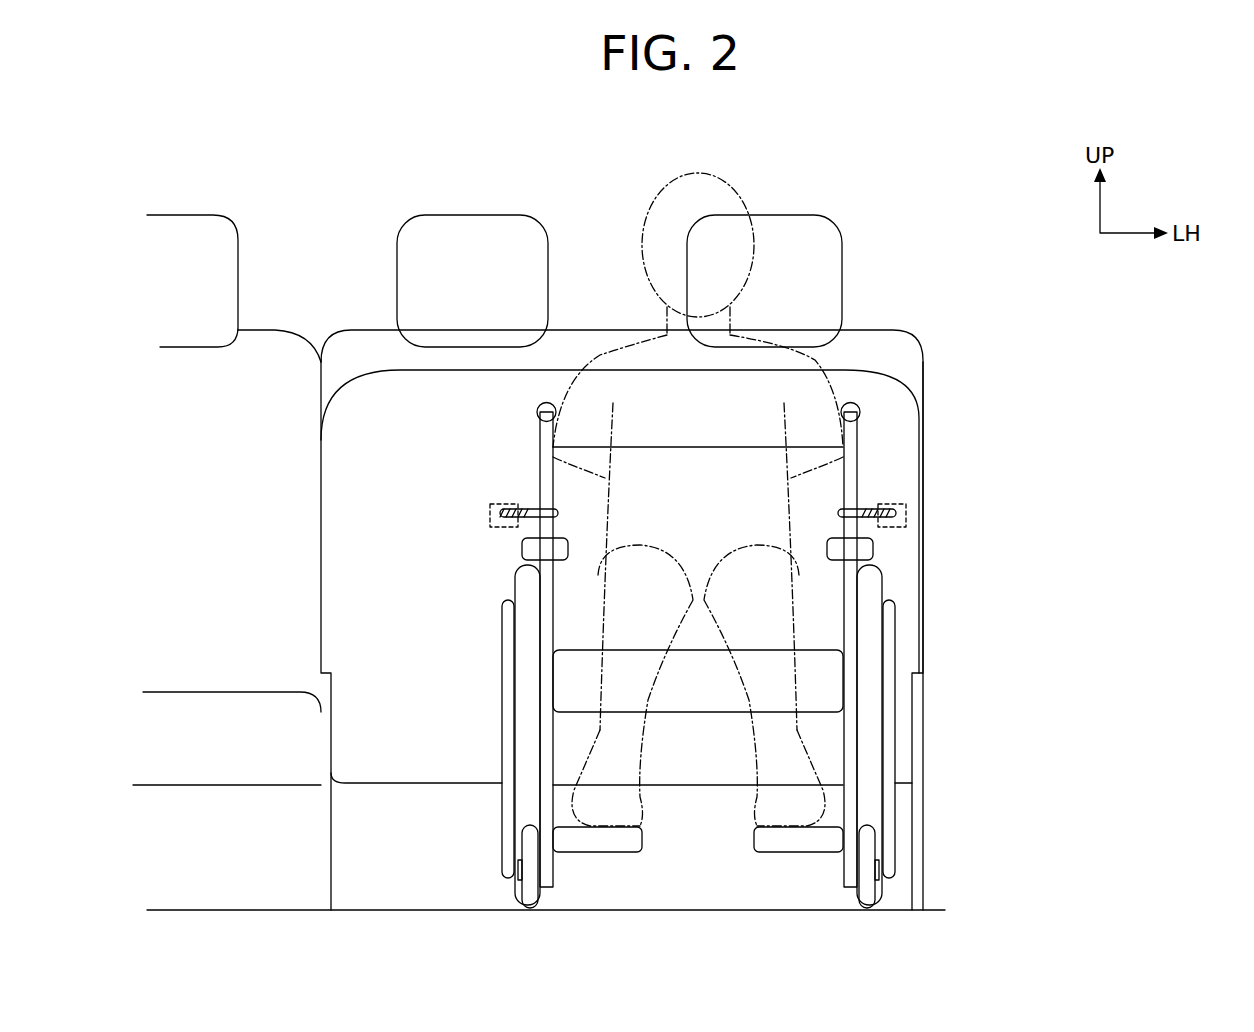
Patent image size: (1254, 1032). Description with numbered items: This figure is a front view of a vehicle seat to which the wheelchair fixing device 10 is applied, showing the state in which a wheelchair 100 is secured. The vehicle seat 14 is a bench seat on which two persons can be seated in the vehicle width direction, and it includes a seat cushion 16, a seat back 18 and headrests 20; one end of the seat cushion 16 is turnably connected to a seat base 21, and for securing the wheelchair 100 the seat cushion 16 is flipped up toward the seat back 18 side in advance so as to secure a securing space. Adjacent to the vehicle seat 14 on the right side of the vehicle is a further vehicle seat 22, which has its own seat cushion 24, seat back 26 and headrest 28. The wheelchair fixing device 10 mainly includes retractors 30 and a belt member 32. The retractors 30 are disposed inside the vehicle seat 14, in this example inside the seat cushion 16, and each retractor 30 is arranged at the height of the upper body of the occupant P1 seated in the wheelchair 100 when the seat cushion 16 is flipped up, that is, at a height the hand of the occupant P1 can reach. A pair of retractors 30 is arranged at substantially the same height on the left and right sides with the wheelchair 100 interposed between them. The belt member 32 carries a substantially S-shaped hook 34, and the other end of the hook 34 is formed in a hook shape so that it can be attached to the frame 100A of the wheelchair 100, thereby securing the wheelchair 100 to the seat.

The wheelchair fixing device 10 is at (968, 528).
The vehicle seat 14 is at (905, 331).
The seat cushion 16 is at (912, 394).
The seat back 18 is at (925, 366).
The headrest 20 is at (400, 225).
The seat base 21 is at (925, 768).
The vehicle seat 22 is at (283, 329).
The seat cushion 24 is at (200, 692).
The seat back 26 is at (318, 345).
The headrest 28 is at (175, 215).
The retractor 30 is at (490, 515).
The belt member 32 is at (507, 526).
The hook 34 is at (544, 506).
The wheelchair 100 is at (663, 446).
The frame 100A is at (843, 455).
The occupant P1 is at (648, 214).